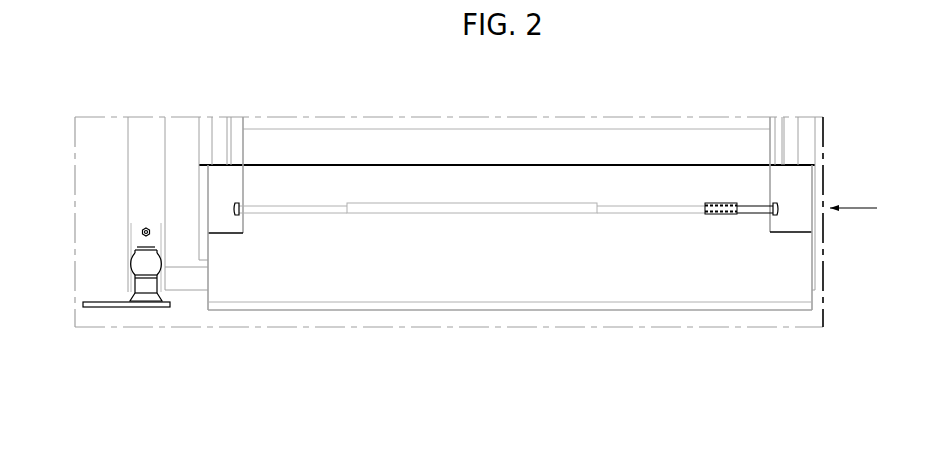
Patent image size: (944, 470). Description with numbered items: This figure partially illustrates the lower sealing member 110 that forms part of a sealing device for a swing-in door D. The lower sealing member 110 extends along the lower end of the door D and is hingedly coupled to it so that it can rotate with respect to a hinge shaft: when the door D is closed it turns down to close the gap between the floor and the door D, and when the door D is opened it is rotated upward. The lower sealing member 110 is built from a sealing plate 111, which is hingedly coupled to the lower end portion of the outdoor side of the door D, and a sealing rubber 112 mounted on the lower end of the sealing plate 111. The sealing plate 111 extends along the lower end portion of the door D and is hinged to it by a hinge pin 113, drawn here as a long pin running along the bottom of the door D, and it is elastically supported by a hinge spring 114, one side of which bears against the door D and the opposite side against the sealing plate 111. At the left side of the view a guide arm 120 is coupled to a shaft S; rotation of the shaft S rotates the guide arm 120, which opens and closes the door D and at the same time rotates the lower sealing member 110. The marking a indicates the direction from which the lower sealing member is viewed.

The lower sealing member 110 is at (338, 317).
The sealing plate 111 is at (485, 287).
The sealing rubber 112 is at (407, 305).
The hinge pin 113 is at (300, 205).
The hinge spring 114 is at (720, 202).
The guide arm 120 is at (187, 292).
The shaft S is at (127, 180).
The door D is at (489, 180).
The viewing direction a is at (893, 203).